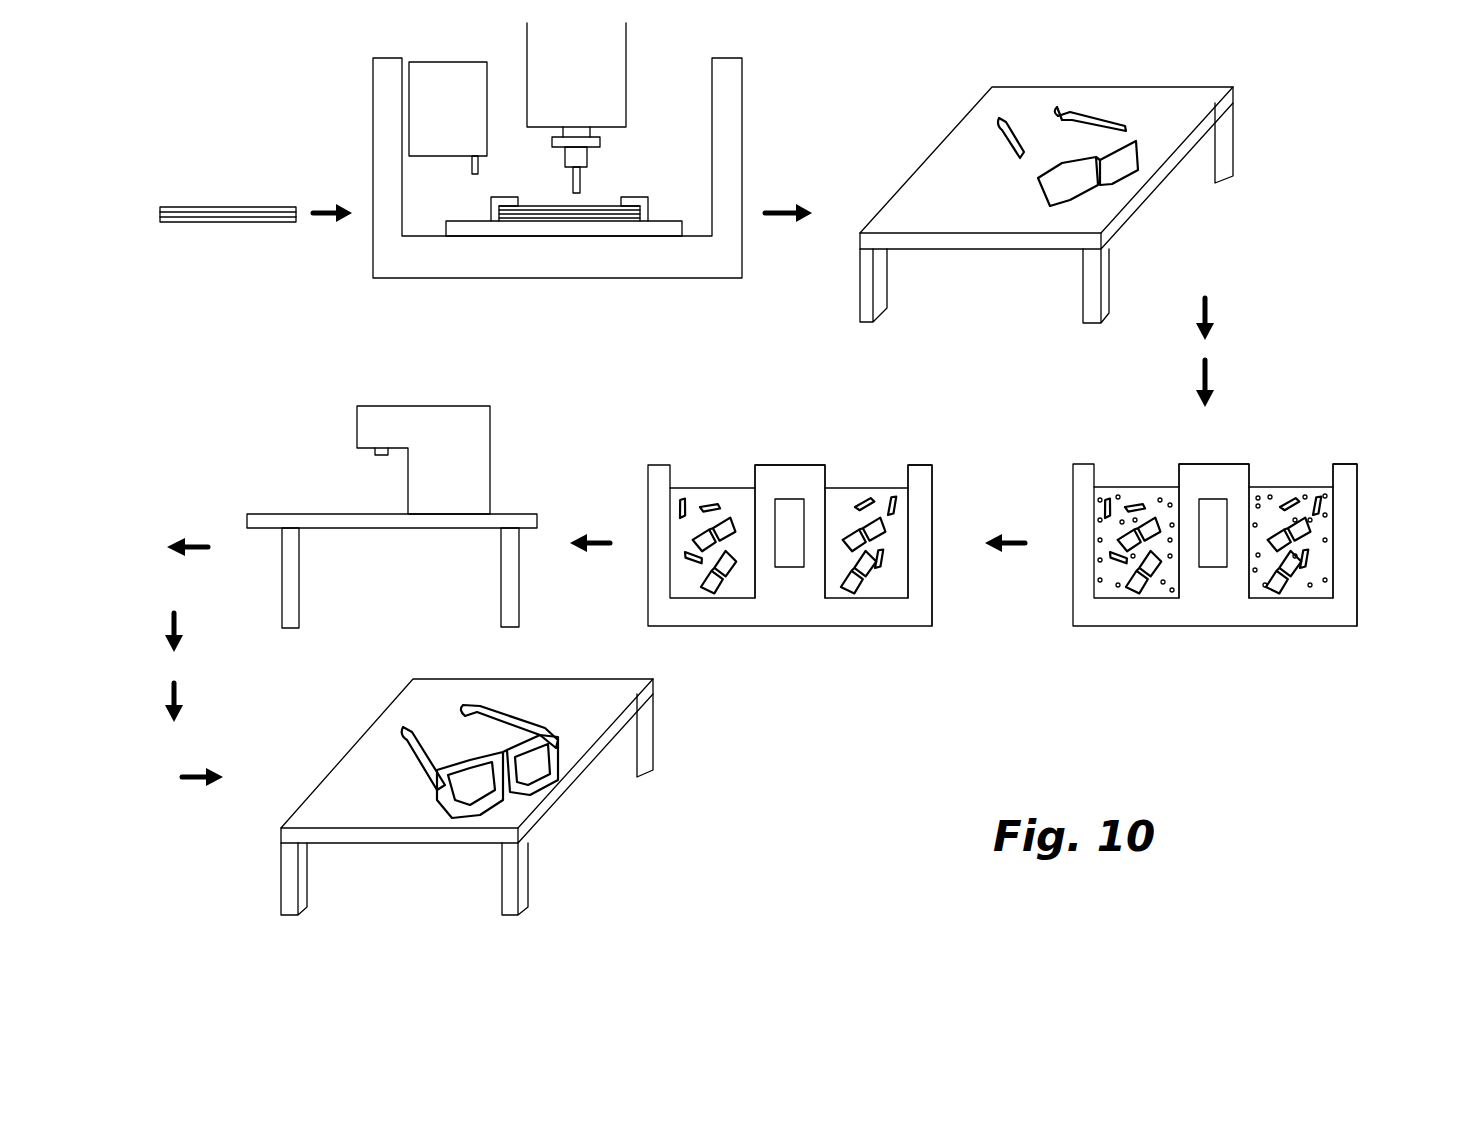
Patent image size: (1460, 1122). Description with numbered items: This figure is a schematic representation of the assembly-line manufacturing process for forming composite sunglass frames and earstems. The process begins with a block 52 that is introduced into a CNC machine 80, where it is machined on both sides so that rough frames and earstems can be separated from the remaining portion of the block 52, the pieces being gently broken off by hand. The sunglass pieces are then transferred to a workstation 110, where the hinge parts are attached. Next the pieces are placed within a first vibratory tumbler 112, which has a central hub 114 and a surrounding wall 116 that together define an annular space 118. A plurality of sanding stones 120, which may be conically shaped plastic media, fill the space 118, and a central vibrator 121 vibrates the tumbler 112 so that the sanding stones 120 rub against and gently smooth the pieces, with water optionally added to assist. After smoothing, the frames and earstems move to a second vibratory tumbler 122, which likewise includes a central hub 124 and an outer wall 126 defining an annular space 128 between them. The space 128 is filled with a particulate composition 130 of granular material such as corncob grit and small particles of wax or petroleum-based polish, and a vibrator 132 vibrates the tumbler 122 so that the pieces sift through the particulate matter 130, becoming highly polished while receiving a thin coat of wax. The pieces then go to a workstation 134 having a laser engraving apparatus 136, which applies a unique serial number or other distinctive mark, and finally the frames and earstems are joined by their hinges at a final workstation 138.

The block 52 is at (233, 207).
The CNC machine 80 is at (366, 93).
The workstation 110 is at (936, 97).
The first vibratory tumbler 112 is at (1235, 535).
The central hub 114 is at (1228, 465).
The surrounding wall 116 is at (1357, 473).
The annular space 118 is at (1144, 472).
The sanding stones 120 is at (1113, 495).
The central vibrator 121 is at (1213, 557).
The second vibratory tumbler 122 is at (812, 545).
The central hub 124 is at (798, 463).
The outer wall 126 is at (932, 470).
The annular space 128 is at (868, 475).
The particulate composition 130 is at (715, 495).
The vibrator 132 is at (788, 557).
The workstation 134 is at (388, 486).
The laser engraving apparatus 136 is at (470, 406).
The final workstation 138 is at (358, 707).